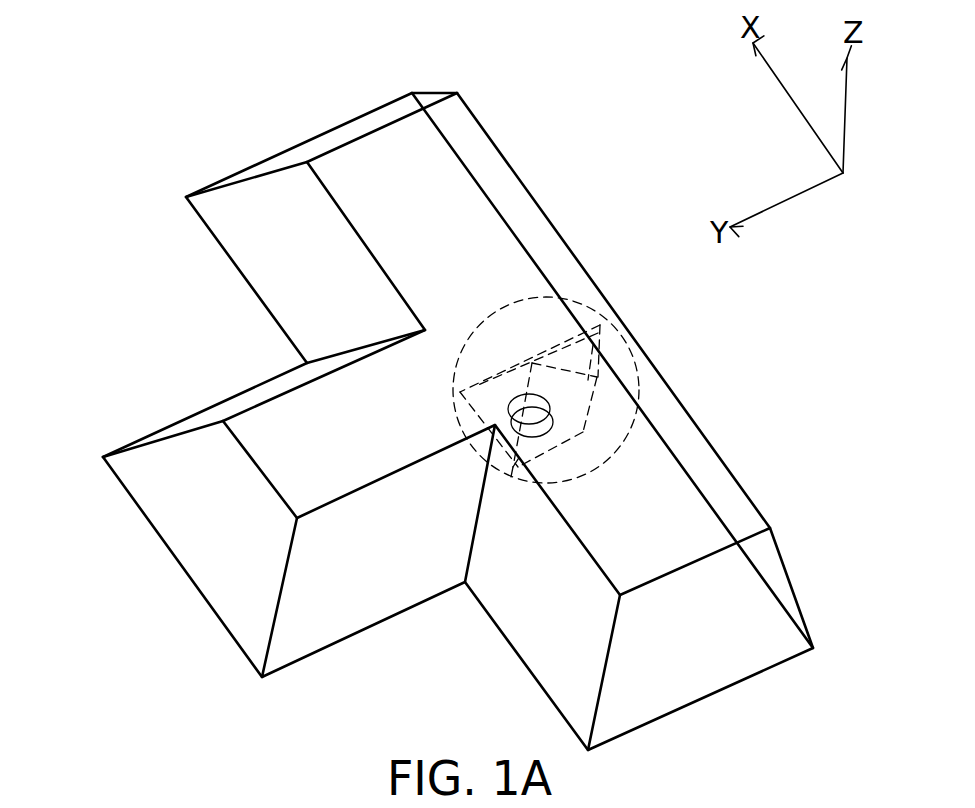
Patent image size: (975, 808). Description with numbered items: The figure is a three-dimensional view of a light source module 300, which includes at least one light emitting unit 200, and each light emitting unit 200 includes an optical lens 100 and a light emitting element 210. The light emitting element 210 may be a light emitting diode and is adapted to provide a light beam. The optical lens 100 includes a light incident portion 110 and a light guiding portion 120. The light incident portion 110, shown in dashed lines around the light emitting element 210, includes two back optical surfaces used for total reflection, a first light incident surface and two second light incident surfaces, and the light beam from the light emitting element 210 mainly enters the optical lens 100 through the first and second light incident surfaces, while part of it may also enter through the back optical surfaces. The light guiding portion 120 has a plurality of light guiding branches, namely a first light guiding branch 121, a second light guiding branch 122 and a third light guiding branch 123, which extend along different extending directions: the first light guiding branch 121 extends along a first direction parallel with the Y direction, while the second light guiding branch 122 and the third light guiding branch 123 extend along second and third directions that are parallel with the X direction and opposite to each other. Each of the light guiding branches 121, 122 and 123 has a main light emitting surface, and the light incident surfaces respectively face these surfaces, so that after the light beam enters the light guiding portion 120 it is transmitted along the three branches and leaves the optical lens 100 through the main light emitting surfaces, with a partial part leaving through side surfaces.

The optical lens 100 is at (505, 174).
The light incident portion 110 is at (532, 332).
The light guiding portion 120 is at (100, 32).
The first light guiding branch 121 is at (317, 623).
The second light guiding branch 122 is at (387, 145).
The third light guiding branch 123 is at (698, 673).
The light emitting unit 200 is at (477, 82).
The light emitting element 210 is at (547, 435).
The light source module 300 is at (899, 728).